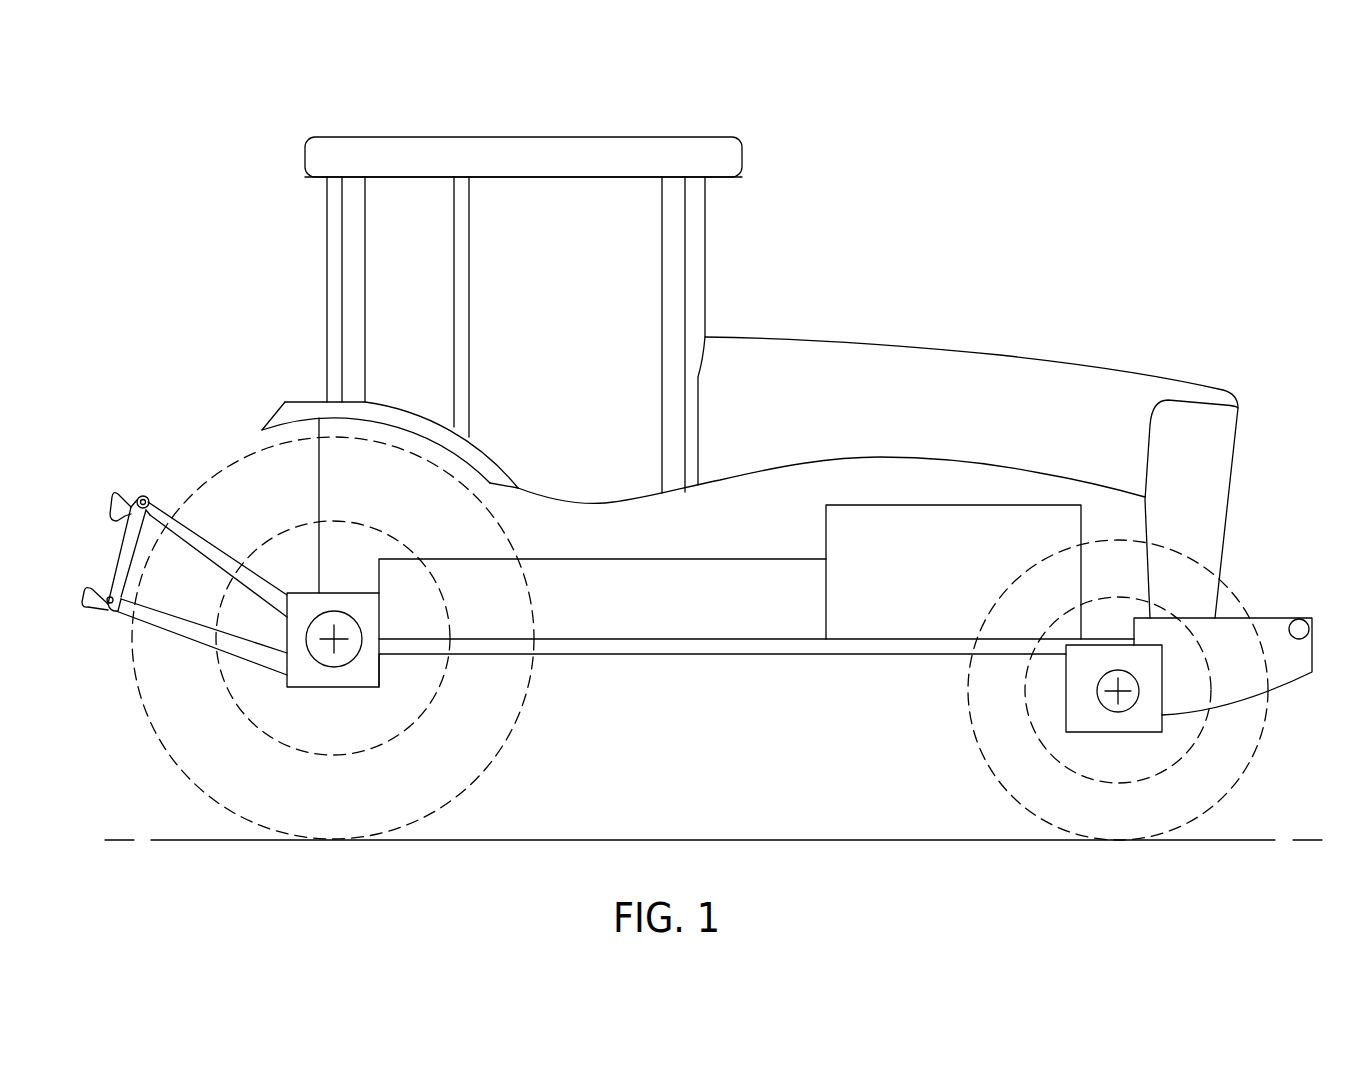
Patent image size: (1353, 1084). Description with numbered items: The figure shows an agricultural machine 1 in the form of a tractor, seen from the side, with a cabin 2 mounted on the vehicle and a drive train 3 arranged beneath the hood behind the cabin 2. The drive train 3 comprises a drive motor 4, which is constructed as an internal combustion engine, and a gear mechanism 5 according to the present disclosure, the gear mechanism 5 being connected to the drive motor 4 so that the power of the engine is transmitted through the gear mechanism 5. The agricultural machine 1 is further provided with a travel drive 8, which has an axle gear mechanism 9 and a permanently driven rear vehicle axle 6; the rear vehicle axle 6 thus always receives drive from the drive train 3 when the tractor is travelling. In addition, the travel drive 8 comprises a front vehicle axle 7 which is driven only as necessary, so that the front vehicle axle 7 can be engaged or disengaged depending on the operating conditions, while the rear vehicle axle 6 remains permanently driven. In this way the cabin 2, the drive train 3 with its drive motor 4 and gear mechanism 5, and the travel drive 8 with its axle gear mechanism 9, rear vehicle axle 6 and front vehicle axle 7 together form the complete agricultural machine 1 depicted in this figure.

The agricultural machine 1 is at (702, 450).
The cabin 2 is at (582, 160).
The drive train 3 is at (745, 433).
The drive motor 4 is at (875, 573).
The gear mechanism 5 is at (647, 593).
The rear vehicle axle 6 is at (335, 640).
The front vehicle axle 7 is at (1118, 691).
The travel drive 8 is at (294, 570).
The axle gear mechanism 9 is at (357, 604).